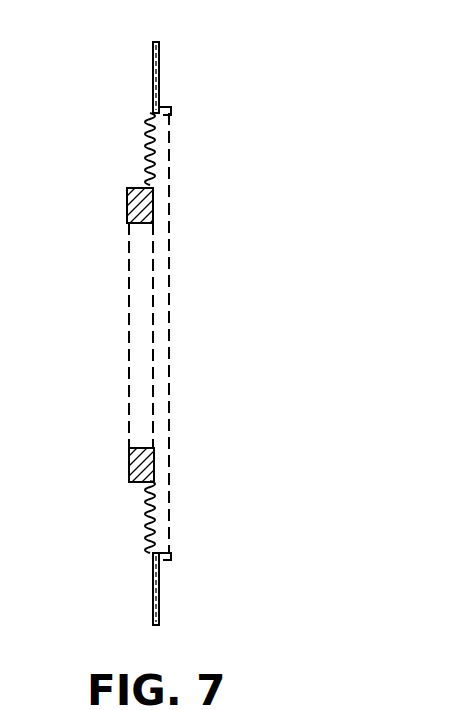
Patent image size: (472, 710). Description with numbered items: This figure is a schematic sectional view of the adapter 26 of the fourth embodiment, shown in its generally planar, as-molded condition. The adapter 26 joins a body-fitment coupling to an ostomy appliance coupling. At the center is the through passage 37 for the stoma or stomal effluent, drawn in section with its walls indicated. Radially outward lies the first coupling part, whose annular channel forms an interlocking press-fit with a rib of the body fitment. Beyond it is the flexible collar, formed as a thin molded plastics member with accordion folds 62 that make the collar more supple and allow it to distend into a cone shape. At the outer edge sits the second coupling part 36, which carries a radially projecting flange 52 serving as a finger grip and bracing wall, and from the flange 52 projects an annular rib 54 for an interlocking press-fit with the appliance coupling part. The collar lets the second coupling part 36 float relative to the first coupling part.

The adapter 26 is at (210, 476).
The second coupling part 36 is at (151, 79).
The radially projecting flange 52 is at (160, 70).
The annular rib 54 is at (166, 111).
The accordion folds 62 is at (148, 182).
The through passage 37 is at (140, 316).